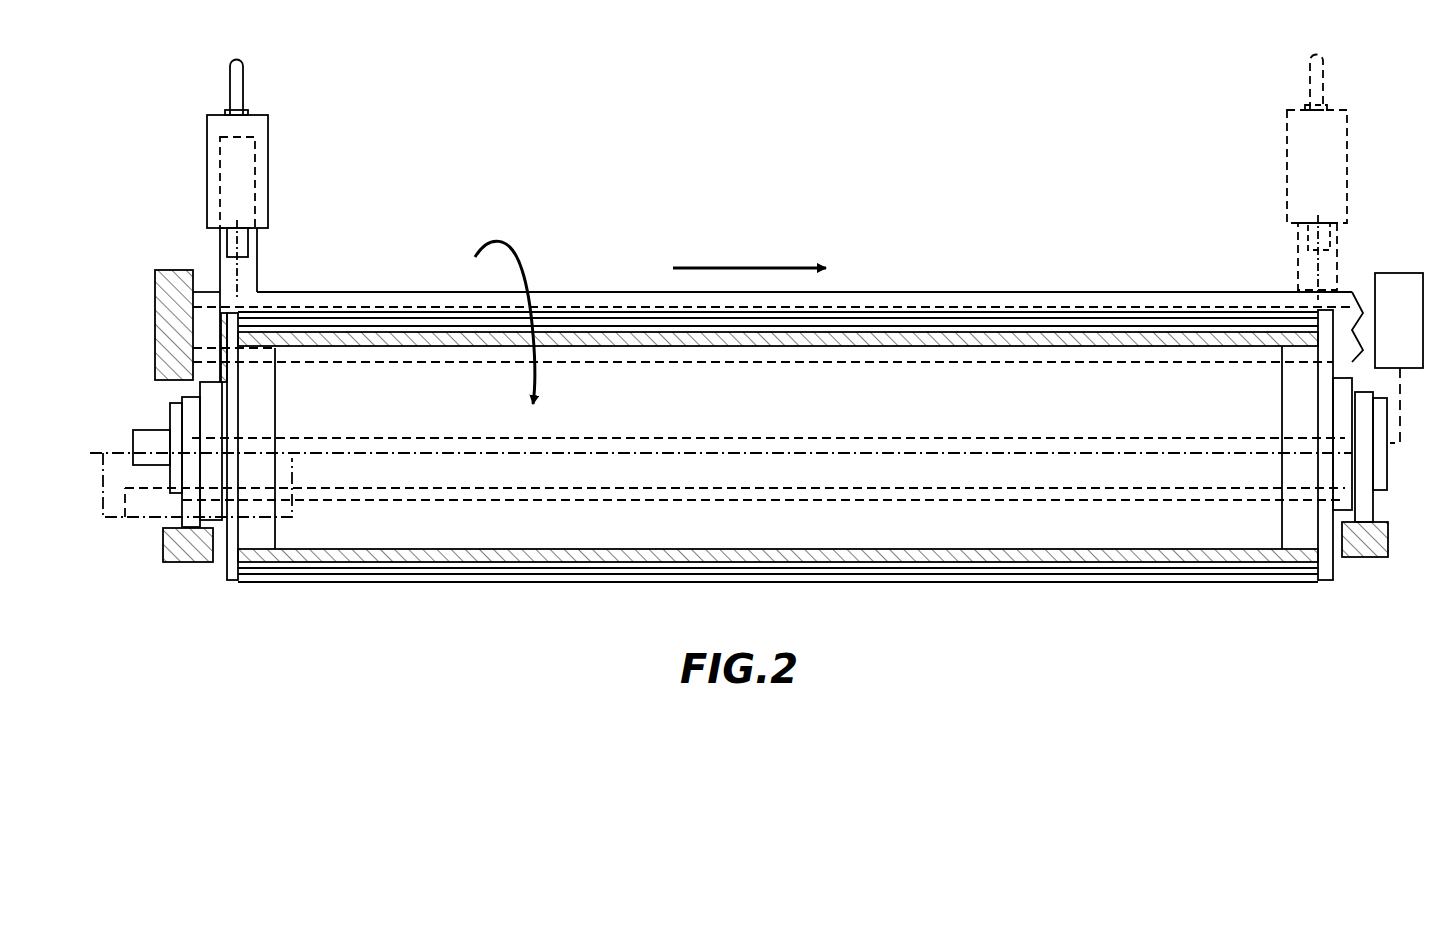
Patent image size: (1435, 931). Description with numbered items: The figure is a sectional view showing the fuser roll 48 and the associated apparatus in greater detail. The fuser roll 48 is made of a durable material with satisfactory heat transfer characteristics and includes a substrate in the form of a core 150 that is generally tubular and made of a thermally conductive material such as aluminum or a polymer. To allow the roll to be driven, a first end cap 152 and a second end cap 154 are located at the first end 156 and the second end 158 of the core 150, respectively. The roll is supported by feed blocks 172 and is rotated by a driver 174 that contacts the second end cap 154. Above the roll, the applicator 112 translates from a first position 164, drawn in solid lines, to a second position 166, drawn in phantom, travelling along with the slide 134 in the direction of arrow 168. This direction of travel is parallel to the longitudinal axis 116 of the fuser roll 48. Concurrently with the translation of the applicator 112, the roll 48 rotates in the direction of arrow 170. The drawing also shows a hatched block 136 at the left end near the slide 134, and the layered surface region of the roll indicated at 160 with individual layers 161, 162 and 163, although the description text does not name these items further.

The fuser roll 48 is at (1066, 600).
The applicator 112 is at (268, 136).
The longitudinal axis 116 is at (113, 453).
The slide 134 is at (400, 291).
The mounting block 136 is at (172, 270).
The core 150 is at (1130, 334).
The first end cap 152 is at (222, 372).
The second end cap 154 is at (1350, 302).
The first end 156 is at (240, 564).
The second end 158 is at (1318, 551).
The roller surface layers 160 is at (908, 262).
The layer 161 is at (1068, 326).
The layer 162 is at (1017, 318).
The outer layer 163 is at (960, 312).
The first position 164 is at (262, 249).
The second position 166 is at (1360, 152).
The arrow 168 is at (755, 267).
The arrow 170 is at (523, 262).
The feed blocks 172 is at (190, 512).
The driver 174 is at (1403, 278).